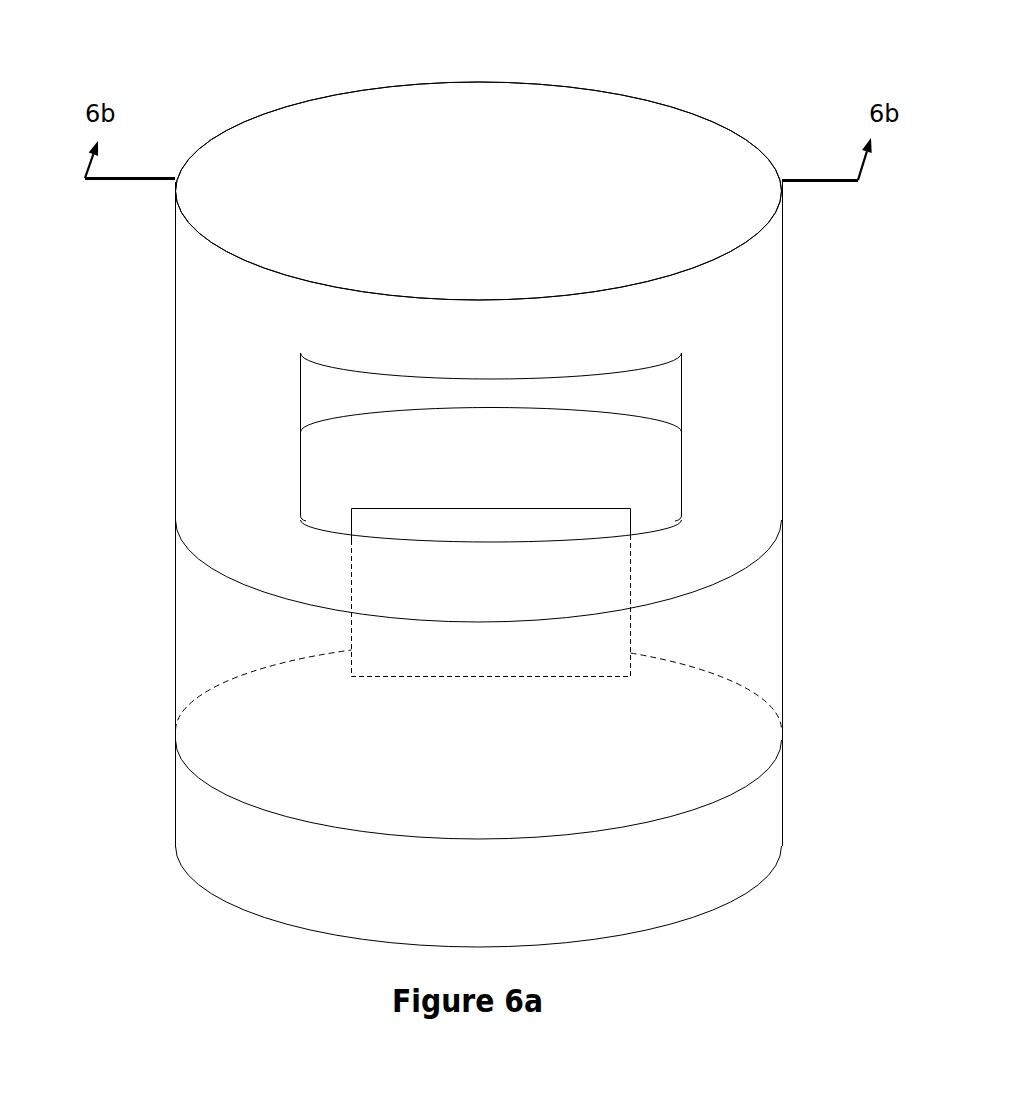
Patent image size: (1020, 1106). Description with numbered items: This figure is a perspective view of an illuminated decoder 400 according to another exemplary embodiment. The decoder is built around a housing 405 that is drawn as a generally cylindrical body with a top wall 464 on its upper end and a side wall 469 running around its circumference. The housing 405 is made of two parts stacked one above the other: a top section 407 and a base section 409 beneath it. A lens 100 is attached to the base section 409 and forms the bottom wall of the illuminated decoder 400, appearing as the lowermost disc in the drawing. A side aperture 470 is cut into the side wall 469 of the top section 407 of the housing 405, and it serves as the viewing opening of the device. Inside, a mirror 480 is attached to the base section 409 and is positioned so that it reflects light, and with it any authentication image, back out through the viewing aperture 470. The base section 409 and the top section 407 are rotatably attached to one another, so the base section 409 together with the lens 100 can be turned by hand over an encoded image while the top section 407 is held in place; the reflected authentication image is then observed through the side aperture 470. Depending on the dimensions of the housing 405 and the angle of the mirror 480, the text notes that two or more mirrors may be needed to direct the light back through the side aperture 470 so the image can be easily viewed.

The illuminated decoder 400 is at (675, 61).
The housing 405 is at (360, 90).
The top wall 464 is at (418, 167).
The top section 407 is at (783, 383).
The side aperture 470 is at (681, 442).
The mirror 480 is at (417, 507).
The side wall 469 is at (215, 620).
The base section 409 is at (783, 650).
The lens 100 is at (783, 818).